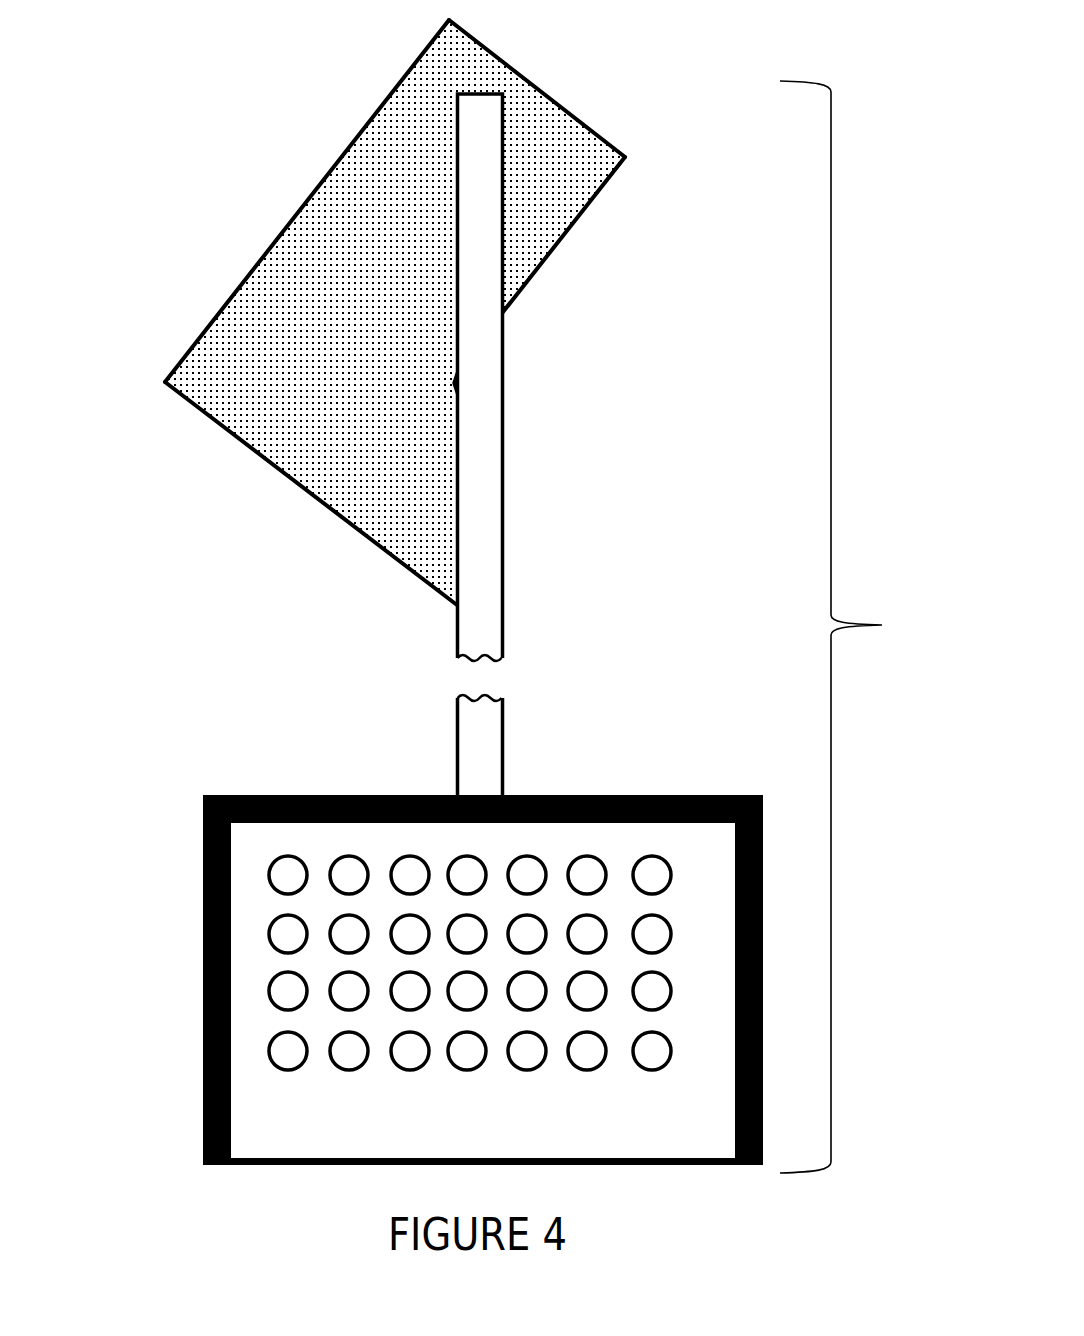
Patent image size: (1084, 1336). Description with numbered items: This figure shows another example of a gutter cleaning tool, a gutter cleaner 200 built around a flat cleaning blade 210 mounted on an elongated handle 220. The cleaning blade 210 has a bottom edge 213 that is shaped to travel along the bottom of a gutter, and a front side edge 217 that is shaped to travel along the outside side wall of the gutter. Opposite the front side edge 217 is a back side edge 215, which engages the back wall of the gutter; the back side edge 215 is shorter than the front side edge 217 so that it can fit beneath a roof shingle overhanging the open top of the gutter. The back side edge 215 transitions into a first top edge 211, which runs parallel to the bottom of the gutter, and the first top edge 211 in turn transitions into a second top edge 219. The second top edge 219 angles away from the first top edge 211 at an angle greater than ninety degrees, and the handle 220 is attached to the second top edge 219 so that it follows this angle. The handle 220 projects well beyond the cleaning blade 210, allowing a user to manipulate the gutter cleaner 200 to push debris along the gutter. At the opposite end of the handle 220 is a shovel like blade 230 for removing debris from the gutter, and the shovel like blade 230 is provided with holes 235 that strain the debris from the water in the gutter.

The gutter cleaner 200 is at (871, 627).
The cleaning blade 210 is at (398, 321).
The first top edge 211 is at (558, 249).
The bottom edge 213 is at (313, 197).
The back side edge 215 is at (543, 92).
The front side edge 217 is at (260, 448).
The second top edge 219 is at (460, 397).
The handle 220 is at (475, 530).
The shovel like blade 230 is at (270, 1100).
The holes 235 is at (652, 856).